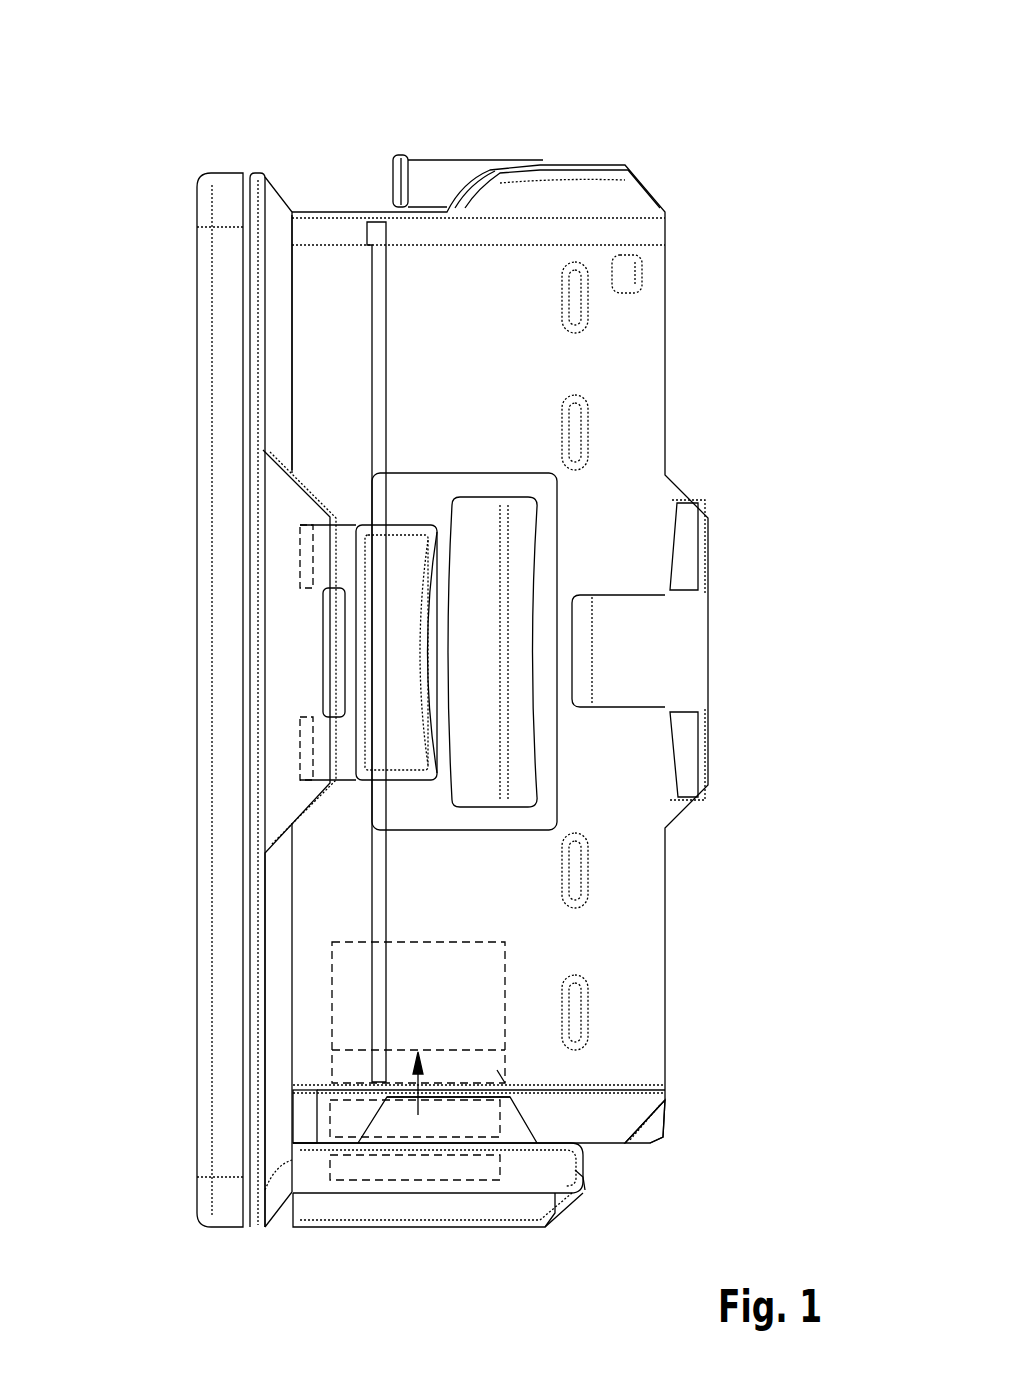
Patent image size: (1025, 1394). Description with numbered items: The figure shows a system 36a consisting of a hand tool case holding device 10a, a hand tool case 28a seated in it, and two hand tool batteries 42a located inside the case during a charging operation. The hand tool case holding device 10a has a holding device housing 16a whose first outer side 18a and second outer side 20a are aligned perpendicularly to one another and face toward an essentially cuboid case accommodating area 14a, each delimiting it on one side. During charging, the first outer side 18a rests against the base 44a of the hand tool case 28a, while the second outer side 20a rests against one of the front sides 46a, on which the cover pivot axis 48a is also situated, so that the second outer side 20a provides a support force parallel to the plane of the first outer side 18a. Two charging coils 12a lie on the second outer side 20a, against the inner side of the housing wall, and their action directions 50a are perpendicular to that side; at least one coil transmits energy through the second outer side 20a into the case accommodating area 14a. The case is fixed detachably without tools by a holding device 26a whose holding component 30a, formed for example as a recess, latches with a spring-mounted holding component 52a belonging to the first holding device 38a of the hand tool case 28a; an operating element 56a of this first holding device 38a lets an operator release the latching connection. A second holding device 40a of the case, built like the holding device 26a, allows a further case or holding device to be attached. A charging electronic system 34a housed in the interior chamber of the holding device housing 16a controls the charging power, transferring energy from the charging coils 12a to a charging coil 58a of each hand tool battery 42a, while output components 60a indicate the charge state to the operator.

The hand tool case holding device 10a is at (153, 240).
The charging coils 12a is at (462, 1075).
The case accommodating area 14a is at (458, 146).
The holding device housing 16a is at (232, 663).
The first outer side 18a is at (297, 282).
The second outer side 20a is at (458, 1100).
The holding device 26a is at (318, 627).
The holding component 30a is at (380, 652).
The hand tool case 28a is at (668, 373).
The charging electronic system 34a is at (403, 1163).
The system 36a is at (681, 105).
The first holding device 38a is at (290, 514).
The holding component 52a is at (328, 652).
The second holding device 40a is at (733, 518).
The hand tool batteries 42a is at (490, 988).
The base 44a is at (289, 891).
The front side 46a is at (478, 1078).
The cover pivot axis 48a is at (655, 1122).
The action directions 50a is at (458, 1100).
The operating element 56a is at (370, 566).
The charging coil 58a is at (497, 1070).
The output components 60a is at (583, 1177).